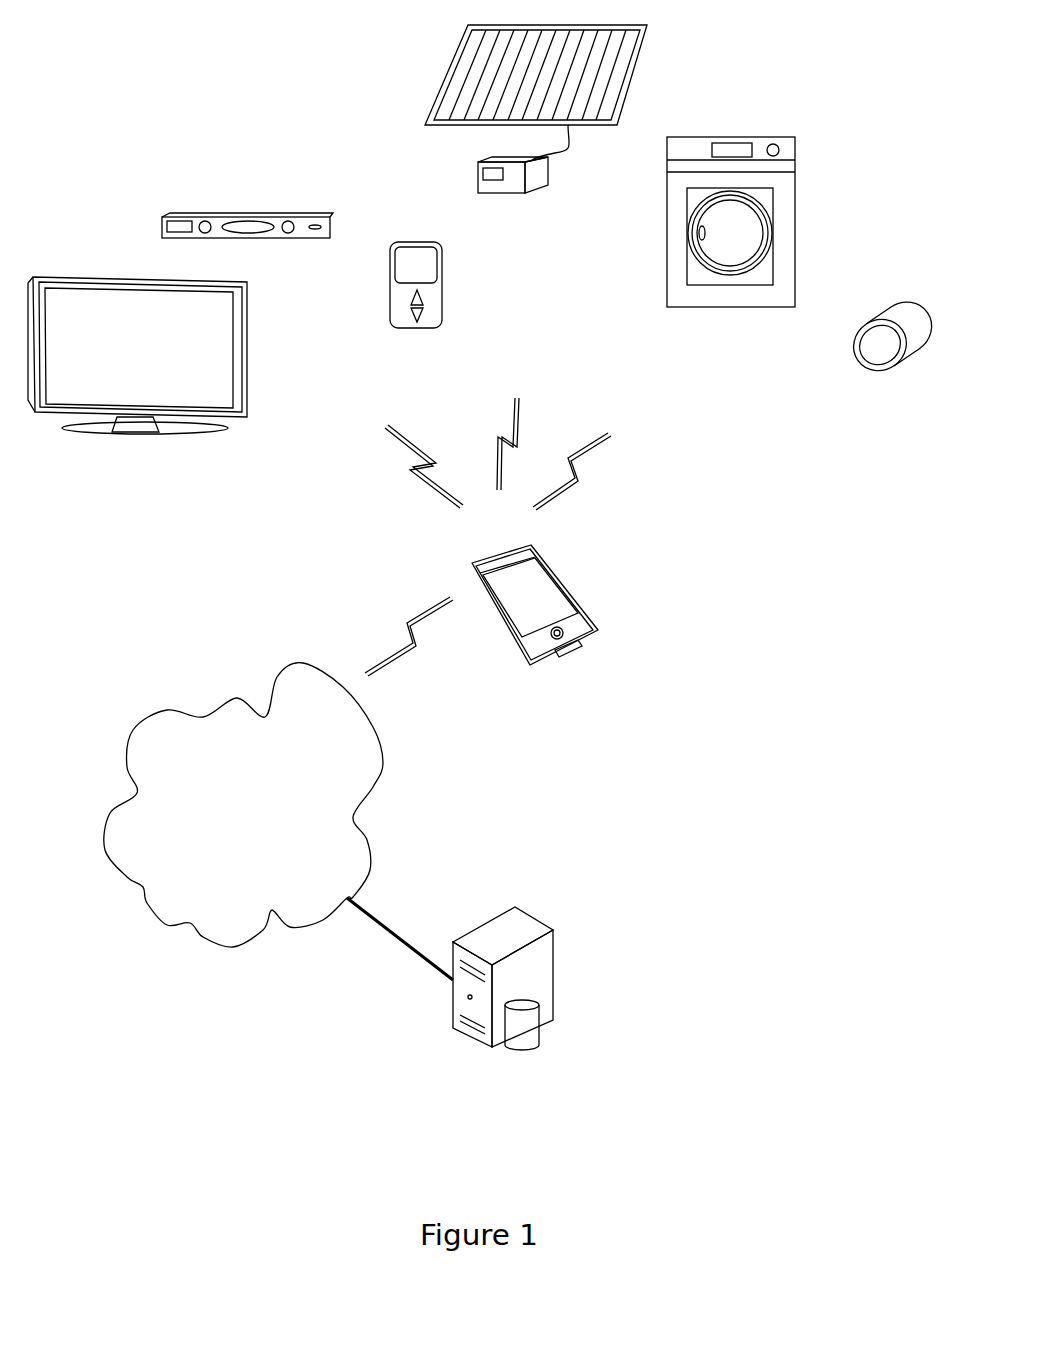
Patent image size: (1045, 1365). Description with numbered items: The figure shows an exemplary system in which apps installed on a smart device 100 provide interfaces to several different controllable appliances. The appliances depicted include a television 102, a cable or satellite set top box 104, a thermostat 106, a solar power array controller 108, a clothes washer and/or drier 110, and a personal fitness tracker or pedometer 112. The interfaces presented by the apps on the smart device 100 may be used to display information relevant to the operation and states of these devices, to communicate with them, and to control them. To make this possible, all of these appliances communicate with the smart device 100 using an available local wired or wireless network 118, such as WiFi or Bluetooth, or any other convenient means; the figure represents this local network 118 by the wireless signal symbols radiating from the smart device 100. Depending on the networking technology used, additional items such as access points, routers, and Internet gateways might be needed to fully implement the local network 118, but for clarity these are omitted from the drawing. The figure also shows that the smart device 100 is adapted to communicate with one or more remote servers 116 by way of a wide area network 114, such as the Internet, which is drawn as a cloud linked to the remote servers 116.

The smart device 100 is at (598, 632).
The television 102 is at (125, 277).
The cable or satellite set top box 104 is at (257, 210).
The thermostat 106 is at (418, 240).
The solar power array controller 108 is at (553, 173).
The clothes washer and/or drier 110 is at (738, 135).
The personal fitness tracker or pedometer 112 is at (870, 303).
The wide area network 114 is at (375, 785).
The remote servers 116 is at (548, 1022).
The local wired or wireless network 118 is at (655, 471).